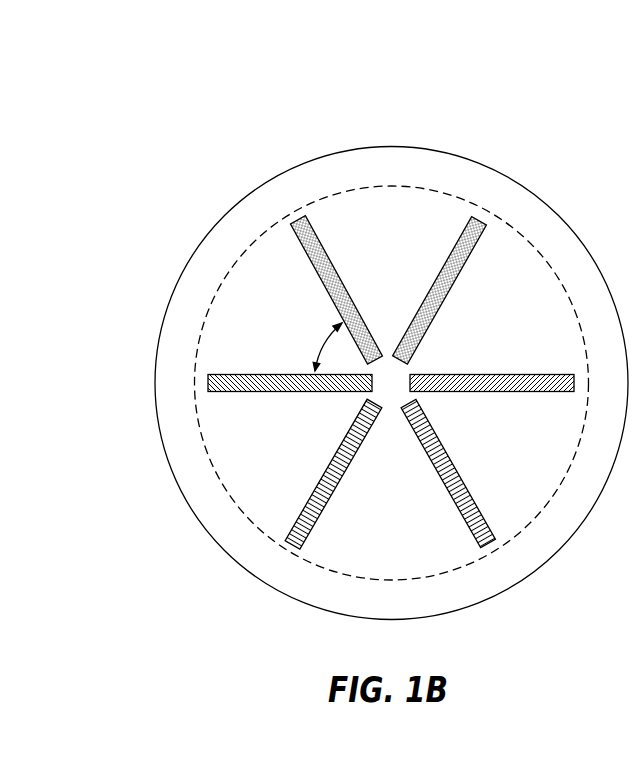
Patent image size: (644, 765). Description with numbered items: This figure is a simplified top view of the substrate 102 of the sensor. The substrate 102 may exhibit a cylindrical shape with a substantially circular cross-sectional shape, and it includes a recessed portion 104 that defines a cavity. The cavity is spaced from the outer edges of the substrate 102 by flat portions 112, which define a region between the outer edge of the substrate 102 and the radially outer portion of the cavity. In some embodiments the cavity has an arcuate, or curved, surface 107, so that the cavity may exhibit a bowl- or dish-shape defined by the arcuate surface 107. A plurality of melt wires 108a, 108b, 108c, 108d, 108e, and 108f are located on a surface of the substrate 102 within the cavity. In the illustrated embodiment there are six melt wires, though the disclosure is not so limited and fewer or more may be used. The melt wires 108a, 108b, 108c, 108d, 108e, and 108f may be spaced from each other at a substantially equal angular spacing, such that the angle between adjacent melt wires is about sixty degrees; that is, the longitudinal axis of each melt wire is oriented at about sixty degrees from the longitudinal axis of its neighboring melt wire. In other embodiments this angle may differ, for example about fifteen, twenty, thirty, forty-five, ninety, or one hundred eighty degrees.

The substrate 102 is at (275, 118).
The flat portions 112 is at (403, 168).
The arcuate surface 107 is at (533, 245).
The recessed portion 104 is at (407, 294).
The melt wire 108a is at (442, 290).
The melt wire 108b is at (497, 392).
The melt wire 108c is at (437, 478).
The melt wire 108d is at (330, 465).
The melt wire 108e is at (249, 373).
The melt wire 108f is at (325, 255).